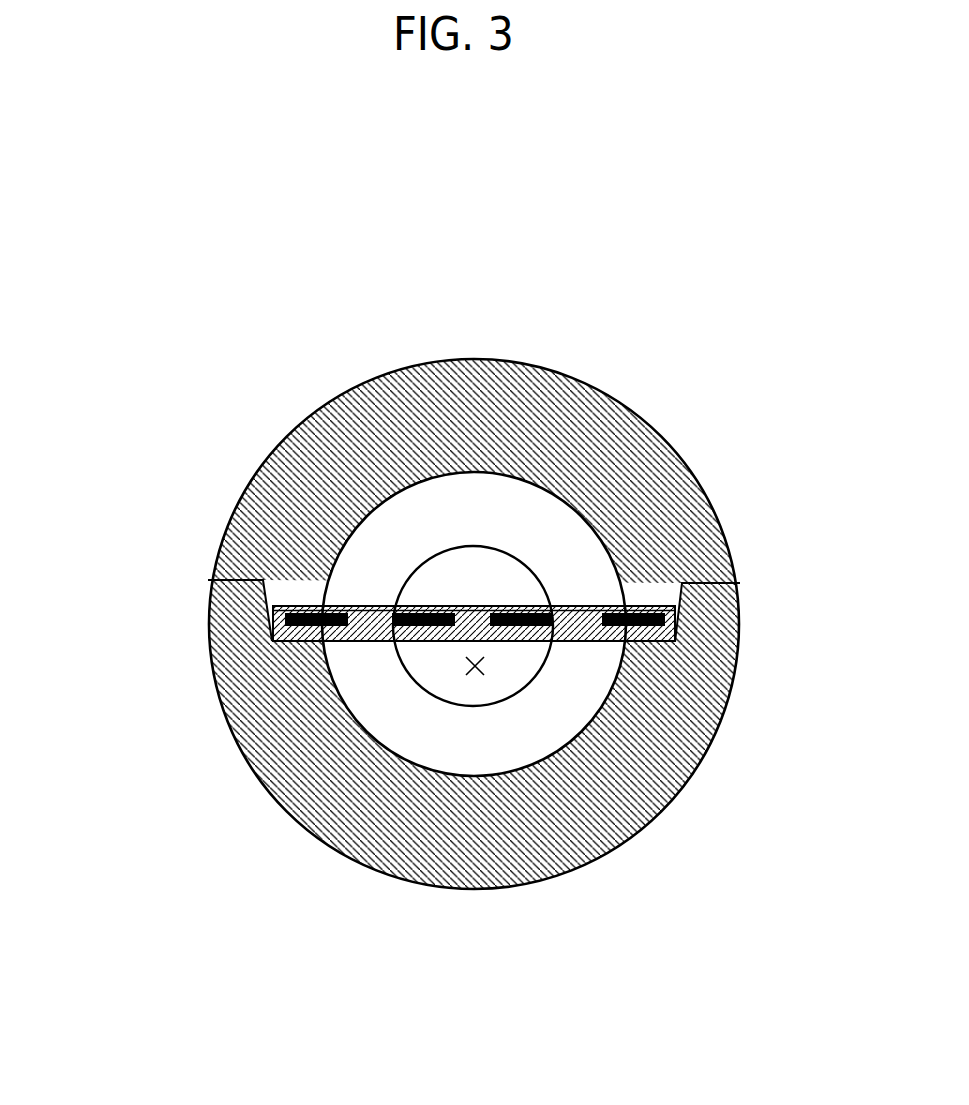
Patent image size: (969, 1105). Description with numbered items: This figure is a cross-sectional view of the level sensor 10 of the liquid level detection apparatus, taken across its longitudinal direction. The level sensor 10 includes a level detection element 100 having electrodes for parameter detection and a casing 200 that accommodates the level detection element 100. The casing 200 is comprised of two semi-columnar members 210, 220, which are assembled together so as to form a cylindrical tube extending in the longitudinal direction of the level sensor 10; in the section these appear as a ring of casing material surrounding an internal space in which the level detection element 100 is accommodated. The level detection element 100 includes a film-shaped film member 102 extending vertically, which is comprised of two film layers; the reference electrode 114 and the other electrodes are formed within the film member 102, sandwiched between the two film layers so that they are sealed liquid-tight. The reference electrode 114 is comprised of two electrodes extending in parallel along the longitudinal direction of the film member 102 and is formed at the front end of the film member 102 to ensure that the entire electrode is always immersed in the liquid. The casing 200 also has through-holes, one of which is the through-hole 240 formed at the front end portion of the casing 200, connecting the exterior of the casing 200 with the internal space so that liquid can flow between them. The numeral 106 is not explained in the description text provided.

The level sensor 10 is at (491, 268).
The level detection element 100 is at (572, 650).
The film member 102 is at (612, 654).
The electrode terminal 106 is at (640, 607).
The reference electrode 114 is at (427, 606).
The casing 200 is at (341, 593).
The semi-columnar member 210 is at (224, 531).
The semi-columnar member 220 is at (210, 598).
The through-hole 240 is at (476, 670).